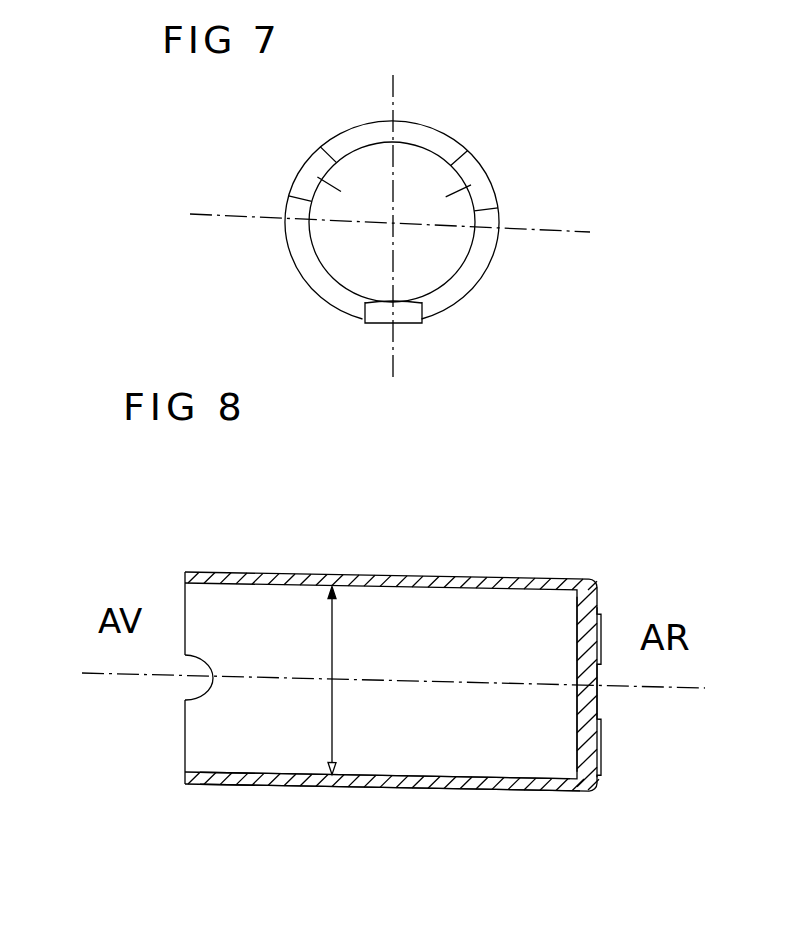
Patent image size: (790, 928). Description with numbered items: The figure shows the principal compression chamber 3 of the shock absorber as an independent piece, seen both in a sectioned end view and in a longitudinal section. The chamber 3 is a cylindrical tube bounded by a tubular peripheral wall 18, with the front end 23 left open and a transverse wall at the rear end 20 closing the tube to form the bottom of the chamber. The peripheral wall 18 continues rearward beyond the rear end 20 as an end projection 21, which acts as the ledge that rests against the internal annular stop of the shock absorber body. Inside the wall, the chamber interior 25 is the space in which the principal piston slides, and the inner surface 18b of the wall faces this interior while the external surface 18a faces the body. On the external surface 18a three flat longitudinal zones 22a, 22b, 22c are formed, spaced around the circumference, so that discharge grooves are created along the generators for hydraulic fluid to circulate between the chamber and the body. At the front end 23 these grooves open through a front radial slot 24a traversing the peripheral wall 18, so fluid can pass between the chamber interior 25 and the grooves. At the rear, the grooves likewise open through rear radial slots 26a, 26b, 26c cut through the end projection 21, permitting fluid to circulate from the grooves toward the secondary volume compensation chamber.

In FIG. 8, the principal compression chamber 3 is at (490, 513).
In FIG. 8, the tubular peripheral wall 18 is at (427, 788).
In FIG. 8, the external surface 18a is at (377, 792).
In FIG. 8, the inner surface of tubular wall 18b is at (378, 765).
In FIG. 8, the rear end 20 is at (585, 665).
In FIG. 8, the end projection 21 is at (600, 790).
In FIG. 7, the flat longitudinal zone 22a is at (397, 327).
In FIG. 7, the flat longitudinal zone 22b is at (480, 177).
In FIG. 7, the flat longitudinal zone 22c is at (303, 172).
In FIG. 8, the front end 23 is at (177, 753).
In FIG. 8, the front radial slot 24a is at (198, 678).
In FIG. 8, the chamber interior 25 is at (275, 735).
In FIG. 7, the rear radial slot 26a is at (378, 312).
In FIG. 7, the rear radial slot 26b is at (465, 173).
In FIG. 7, the rear radial slot 26c is at (303, 180).